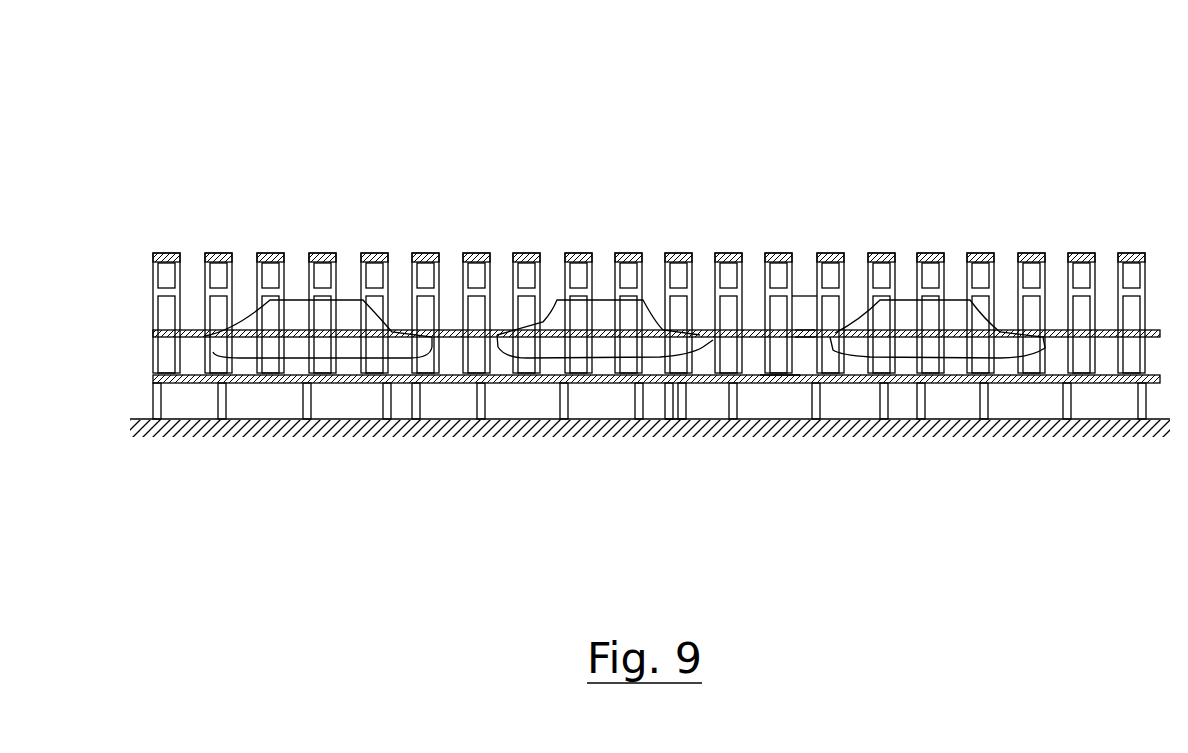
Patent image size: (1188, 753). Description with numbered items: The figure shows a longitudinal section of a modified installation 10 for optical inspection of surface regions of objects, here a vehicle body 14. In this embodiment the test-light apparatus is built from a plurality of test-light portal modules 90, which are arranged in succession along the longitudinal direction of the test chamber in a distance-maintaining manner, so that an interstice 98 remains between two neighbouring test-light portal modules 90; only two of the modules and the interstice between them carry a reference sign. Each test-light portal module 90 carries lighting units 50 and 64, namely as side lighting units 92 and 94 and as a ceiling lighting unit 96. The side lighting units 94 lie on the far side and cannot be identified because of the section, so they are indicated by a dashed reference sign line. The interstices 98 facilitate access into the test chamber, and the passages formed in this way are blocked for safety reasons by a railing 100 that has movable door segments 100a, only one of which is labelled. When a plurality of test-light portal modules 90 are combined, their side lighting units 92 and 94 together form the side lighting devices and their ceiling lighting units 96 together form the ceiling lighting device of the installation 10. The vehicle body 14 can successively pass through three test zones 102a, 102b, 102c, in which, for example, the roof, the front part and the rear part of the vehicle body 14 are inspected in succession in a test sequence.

The installation 10 is at (153, 104).
The vehicle body 14 is at (343, 305).
The lighting unit 50 is at (685, 372).
The lighting unit 64 is at (775, 275).
The test-light portal module 90 is at (785, 246).
The side lighting unit 92 is at (769, 390).
The side lighting unit 94 is at (781, 393).
The ceiling lighting unit 96 is at (801, 257).
The interstice 98 is at (803, 352).
The railing 100 is at (1062, 330).
The movable door segment 100a is at (804, 326).
The test zone 102a is at (290, 128).
The test zone 102b is at (580, 120).
The test zone 102c is at (958, 120).